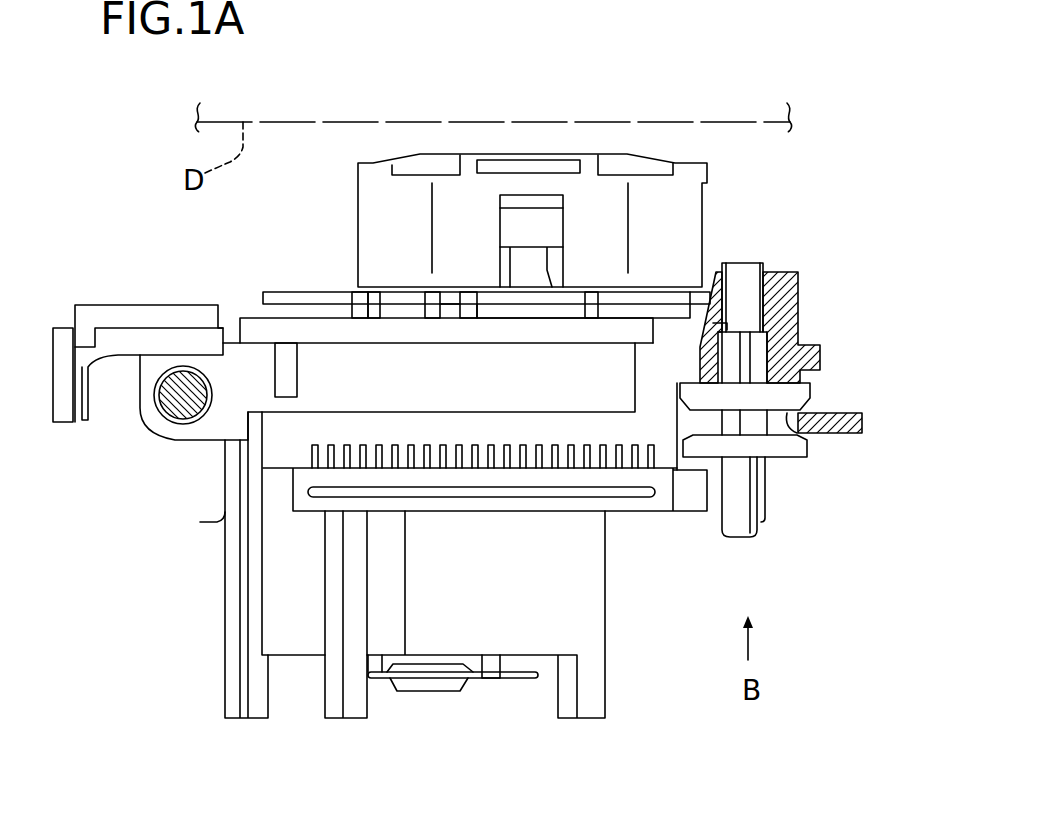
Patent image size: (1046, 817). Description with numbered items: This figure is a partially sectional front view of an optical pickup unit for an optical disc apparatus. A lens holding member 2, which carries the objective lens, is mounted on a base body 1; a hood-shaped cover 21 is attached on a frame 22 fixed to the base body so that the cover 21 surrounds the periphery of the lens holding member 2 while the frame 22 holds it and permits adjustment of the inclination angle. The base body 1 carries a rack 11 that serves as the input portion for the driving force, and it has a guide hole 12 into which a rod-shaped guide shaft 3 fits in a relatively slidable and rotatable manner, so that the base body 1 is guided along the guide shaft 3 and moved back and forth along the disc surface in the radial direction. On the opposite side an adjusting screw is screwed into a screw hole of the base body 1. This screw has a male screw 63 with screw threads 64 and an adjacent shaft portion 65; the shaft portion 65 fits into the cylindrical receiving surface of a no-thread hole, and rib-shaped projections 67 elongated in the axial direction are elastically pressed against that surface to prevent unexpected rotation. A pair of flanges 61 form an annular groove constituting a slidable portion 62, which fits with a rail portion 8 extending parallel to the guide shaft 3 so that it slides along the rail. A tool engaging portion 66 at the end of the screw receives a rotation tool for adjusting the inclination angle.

The base body 1 is at (806, 299).
The lens holding member 2 is at (298, 262).
The guide shaft 3 is at (168, 420).
The rail portion 8 is at (838, 434).
The rack 11 is at (51, 402).
The guide hole 12 is at (155, 405).
The cover 21 is at (705, 213).
The frame 22 is at (648, 304).
The flanges 61 is at (803, 395).
The slidable portion 62 is at (796, 430).
The male screw 63 is at (767, 264).
The screw thread 64 is at (759, 284).
The shaft portion 65 is at (800, 338).
The tool engaging portion 66 is at (752, 538).
The rib-shaped projections 67 is at (755, 378).